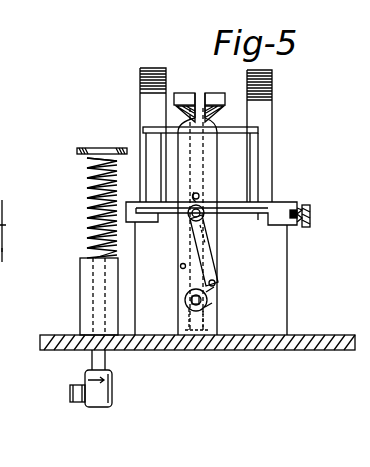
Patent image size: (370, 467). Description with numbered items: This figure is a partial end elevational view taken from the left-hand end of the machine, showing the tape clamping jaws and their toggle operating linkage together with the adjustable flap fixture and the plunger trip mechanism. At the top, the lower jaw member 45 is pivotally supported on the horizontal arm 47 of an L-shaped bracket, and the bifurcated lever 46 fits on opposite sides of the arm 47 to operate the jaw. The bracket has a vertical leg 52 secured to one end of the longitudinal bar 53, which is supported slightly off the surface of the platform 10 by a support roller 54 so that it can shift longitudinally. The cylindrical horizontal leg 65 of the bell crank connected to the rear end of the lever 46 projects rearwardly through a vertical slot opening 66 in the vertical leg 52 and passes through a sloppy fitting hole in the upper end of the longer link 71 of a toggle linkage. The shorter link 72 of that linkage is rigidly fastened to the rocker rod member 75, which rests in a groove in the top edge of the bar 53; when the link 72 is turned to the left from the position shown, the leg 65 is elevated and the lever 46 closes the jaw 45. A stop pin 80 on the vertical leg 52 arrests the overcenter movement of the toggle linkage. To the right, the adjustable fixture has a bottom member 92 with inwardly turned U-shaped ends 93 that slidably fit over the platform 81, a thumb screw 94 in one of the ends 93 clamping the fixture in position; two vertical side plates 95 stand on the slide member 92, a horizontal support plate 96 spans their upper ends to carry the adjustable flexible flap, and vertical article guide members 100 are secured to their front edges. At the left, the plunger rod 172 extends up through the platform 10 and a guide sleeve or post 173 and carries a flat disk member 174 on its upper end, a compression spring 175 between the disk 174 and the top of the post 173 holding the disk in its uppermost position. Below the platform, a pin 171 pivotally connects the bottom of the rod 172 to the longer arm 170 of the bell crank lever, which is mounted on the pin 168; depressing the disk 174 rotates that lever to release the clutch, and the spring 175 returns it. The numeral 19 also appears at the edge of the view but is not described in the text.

The vertical article guide members 100 is at (247, 72).
The lever 46 is at (199, 96).
The horizontal arm 47 is at (204, 97).
The lower jaw member 45 is at (228, 114).
The horizontal support plate 96 is at (258, 128).
The vertical side plates 95 is at (257, 150).
The flat disk member 174 is at (79, 149).
The vertical leg 52 is at (217, 160).
The vertical slot opening 66 is at (200, 197).
The horizontal leg 65 is at (204, 216).
The bottom member 92 is at (281, 203).
The thumb screw 94 is at (311, 212).
The inwardly turned U-shaped ends 93 is at (297, 224).
The platform 81 is at (258, 220).
The longer link 71 is at (208, 252).
The stop pin 80 is at (180, 267).
The shorter link 72 is at (207, 300).
The rocker rod member 75 is at (206, 312).
The longitudinal bar 53 is at (190, 313).
The guide sleeve or post 173 is at (80, 299).
The compression spring 175 is at (88, 234).
The support roller 54 is at (218, 349).
The platform 10 is at (322, 352).
The plunger rod 172 is at (92, 362).
The pin 171 is at (70, 393).
The longer arm 170 is at (80, 408).
The pin 168 is at (13, 214).
The adjacent element 19 is at (12, 247).